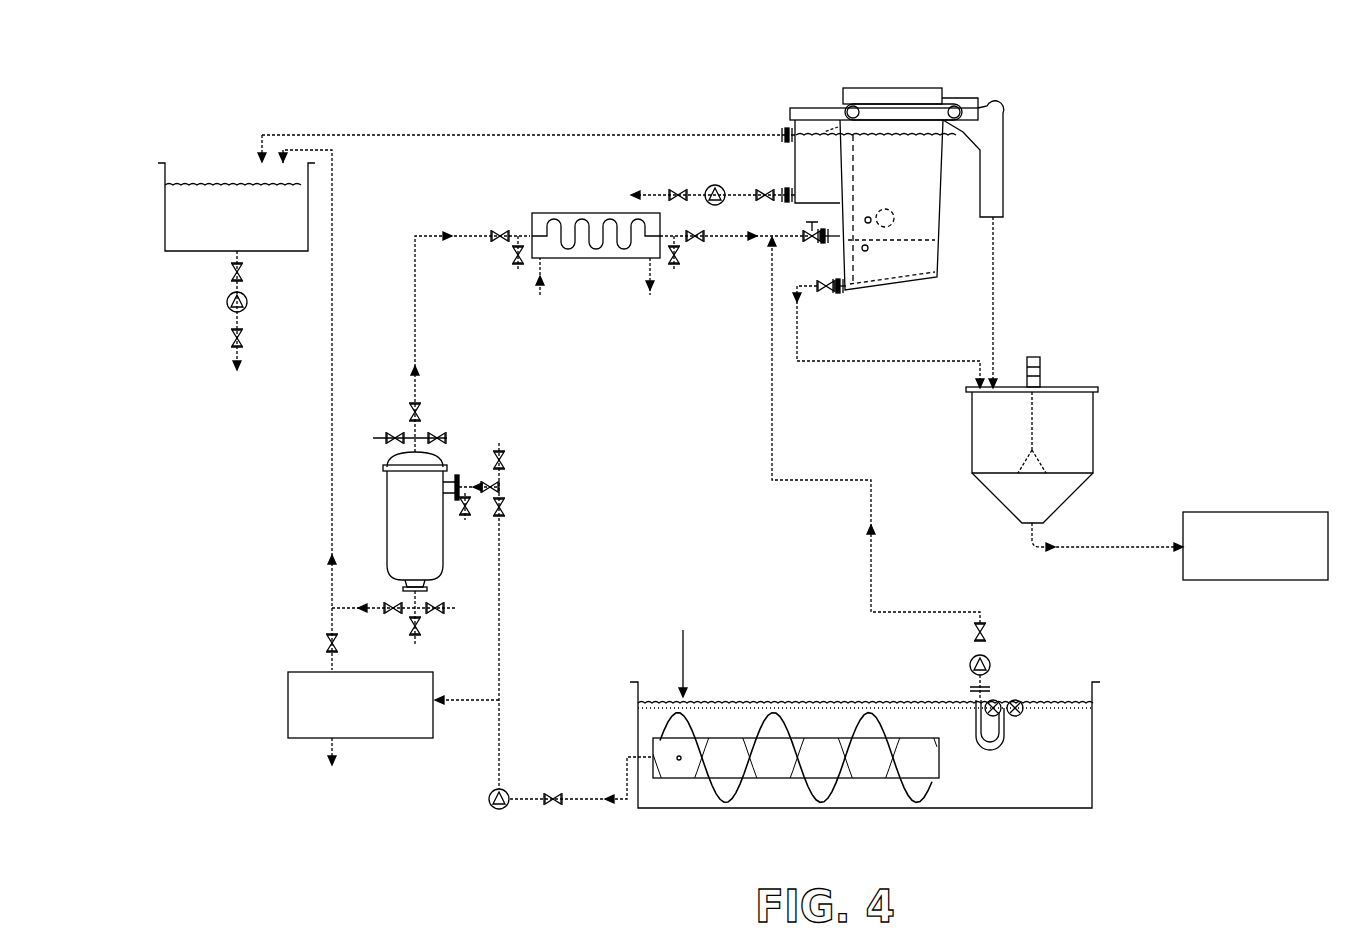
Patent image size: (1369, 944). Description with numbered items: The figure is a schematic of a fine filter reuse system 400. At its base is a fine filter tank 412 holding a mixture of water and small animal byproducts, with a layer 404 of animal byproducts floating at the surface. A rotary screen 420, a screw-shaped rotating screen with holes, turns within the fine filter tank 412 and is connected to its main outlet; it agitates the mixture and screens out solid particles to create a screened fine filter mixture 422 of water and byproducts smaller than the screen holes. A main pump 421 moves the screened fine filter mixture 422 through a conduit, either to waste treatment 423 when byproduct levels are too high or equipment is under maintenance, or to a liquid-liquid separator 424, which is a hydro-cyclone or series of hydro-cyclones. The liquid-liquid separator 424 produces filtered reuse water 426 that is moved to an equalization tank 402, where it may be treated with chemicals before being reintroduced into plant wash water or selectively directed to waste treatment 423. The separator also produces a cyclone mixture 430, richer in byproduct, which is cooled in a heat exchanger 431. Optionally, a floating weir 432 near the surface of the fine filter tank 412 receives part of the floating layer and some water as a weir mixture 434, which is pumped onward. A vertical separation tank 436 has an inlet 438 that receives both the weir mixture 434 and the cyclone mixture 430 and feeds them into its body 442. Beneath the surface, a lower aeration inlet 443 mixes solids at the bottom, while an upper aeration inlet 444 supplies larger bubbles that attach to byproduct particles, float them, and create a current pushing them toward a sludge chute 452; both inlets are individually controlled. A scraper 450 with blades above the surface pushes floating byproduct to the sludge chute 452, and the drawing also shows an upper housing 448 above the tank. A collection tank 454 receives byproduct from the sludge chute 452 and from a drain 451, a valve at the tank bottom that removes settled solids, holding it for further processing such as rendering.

The fine filter reuse system 400 is at (1200, 123).
The equalization tank 402 is at (182, 253).
The layer of animal byproducts 404 is at (900, 702).
The fine filter tank 412 is at (1093, 785).
The rotary screen 420 is at (853, 765).
The main pump 421 is at (506, 791).
The screened fine filter mixture 422 is at (592, 798).
The waste treatment 423 is at (378, 738).
The liquid-liquid separator 424 is at (464, 422).
The filtered reuse water 426 is at (331, 400).
The cyclone mixture 430 is at (415, 250).
The heat exchanger 431 is at (543, 213).
The floating weir 432 is at (1022, 700).
The weir mixture 434 is at (871, 568).
The vertical separation tank 436 is at (795, 72).
The inlet 438 is at (813, 242).
The body 442 is at (842, 166).
The lower aeration inlet 443 is at (866, 251).
The upper aeration inlet 444 is at (870, 223).
The conveyor housing 448 is at (915, 125).
The scraper 450 is at (862, 104).
The drain 451 is at (836, 293).
The sludge chute 452 is at (1005, 170).
The collection tank 454 is at (1082, 423).